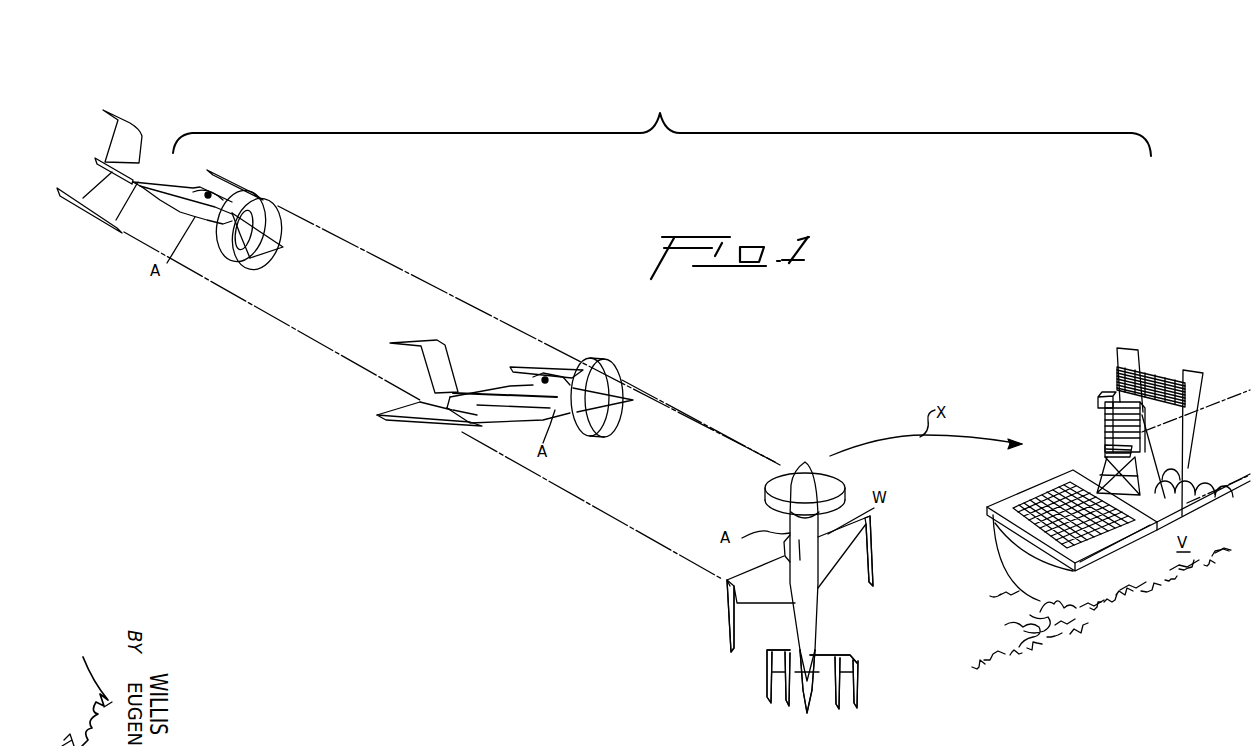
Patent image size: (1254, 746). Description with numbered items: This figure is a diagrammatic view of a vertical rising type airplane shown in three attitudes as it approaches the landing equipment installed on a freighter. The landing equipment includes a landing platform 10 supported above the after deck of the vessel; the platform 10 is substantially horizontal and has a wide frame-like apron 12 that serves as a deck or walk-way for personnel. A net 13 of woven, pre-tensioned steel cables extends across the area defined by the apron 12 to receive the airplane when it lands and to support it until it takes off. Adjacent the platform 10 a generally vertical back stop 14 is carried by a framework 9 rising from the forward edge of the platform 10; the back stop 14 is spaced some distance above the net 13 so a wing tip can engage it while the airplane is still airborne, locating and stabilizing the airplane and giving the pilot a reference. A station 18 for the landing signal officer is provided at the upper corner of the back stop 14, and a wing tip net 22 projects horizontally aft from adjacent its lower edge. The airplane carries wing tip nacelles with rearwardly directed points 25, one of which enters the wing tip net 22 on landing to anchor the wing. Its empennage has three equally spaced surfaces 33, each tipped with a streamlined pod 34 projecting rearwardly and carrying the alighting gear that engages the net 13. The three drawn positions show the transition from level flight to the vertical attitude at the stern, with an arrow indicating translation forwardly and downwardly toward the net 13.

The framework 9 is at (1150, 462).
The platform 10 is at (1022, 494).
The apron 12 is at (1078, 560).
The net 13 is at (1100, 522).
The back stop 14 is at (1098, 420).
The station 18 is at (1100, 397).
The wing tip net 22 is at (1105, 449).
The points 25 is at (728, 650).
The empennage surfaces 33 is at (835, 673).
The streamlined pods 34 is at (768, 692).